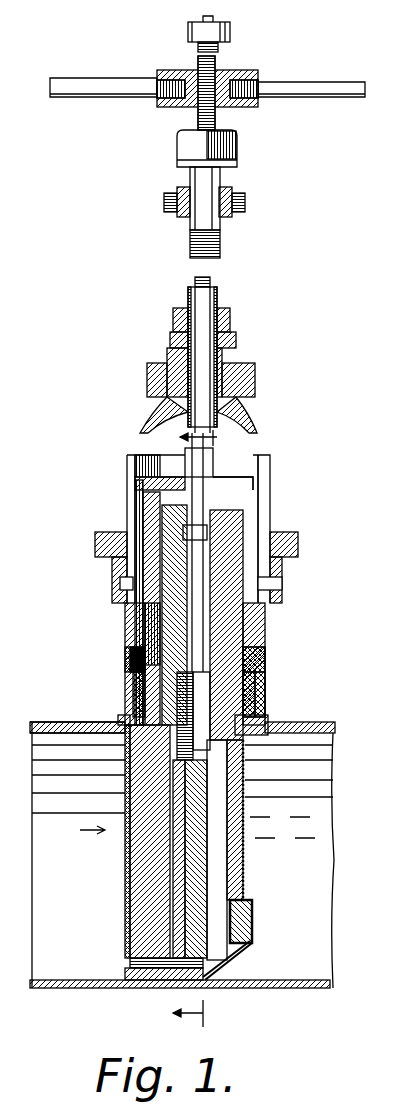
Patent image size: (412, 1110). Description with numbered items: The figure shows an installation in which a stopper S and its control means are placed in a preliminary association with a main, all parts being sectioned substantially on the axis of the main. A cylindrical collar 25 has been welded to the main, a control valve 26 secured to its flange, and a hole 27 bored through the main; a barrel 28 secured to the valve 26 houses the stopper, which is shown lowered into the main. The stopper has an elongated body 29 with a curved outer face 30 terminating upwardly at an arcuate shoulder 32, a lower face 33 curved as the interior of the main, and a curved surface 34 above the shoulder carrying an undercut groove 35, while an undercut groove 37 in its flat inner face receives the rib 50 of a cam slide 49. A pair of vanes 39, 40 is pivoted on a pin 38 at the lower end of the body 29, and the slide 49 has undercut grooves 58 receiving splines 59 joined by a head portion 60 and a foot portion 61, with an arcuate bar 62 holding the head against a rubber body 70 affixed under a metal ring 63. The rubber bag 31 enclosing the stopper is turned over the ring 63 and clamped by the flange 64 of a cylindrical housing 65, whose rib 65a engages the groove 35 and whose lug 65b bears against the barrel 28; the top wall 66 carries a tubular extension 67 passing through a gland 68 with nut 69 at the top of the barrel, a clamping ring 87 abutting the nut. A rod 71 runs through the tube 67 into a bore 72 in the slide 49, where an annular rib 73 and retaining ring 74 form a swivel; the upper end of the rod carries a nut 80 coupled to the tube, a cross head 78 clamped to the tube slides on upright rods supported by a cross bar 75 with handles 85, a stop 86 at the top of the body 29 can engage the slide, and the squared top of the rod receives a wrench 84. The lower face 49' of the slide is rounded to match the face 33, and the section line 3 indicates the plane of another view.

The wrench 84 is at (232, 31).
The handles 85 is at (285, 83).
The tubular extension 67 is at (220, 180).
The nut 80 is at (237, 142).
The cross head 78 is at (177, 206).
The rod 71 is at (217, 306).
The clamping ring 87 is at (173, 318).
The nut 69 is at (234, 341).
The cross bar 75 is at (147, 378).
The gland 68 is at (255, 378).
The section line 3 is at (200, 733).
The barrel 28 is at (270, 462).
The top wall 66 is at (235, 477).
The lug 65b is at (135, 470).
The stop 86 is at (139, 501).
The rib 50 is at (150, 521).
The cylindrical housing 65 is at (259, 506).
The retaining ring 74 is at (206, 525).
The annular rib 73 is at (245, 531).
The bore 72 is at (105, 549).
The control valve 26 is at (282, 576).
The rib 65a is at (120, 586).
The undercut grooves 58 is at (270, 592).
The rubber body 70 is at (125, 691).
The undercut groove 35 is at (148, 626).
The flange 64 is at (127, 656).
The rubber bag 31 is at (133, 661).
The cylindrical collar 25 is at (265, 666).
The metal ring 63 is at (135, 691).
The cam slide 49 is at (276, 694).
The head portion 60 is at (268, 723).
The curved surface 34 is at (122, 719).
The hole 27 is at (120, 726).
The arcuate shoulder 32 is at (125, 746).
The arcuate bar 62 is at (246, 752).
The elongated body 29 is at (150, 891).
The curved outer face 30 is at (127, 856).
The vane 39 is at (178, 856).
The undercut groove 37 is at (190, 901).
The vane 40 is at (207, 861).
The splines 59 is at (240, 896).
The foot portion 61 is at (252, 926).
The pin 38 is at (130, 956).
The face 49' is at (248, 960).
The face 33 is at (160, 985).